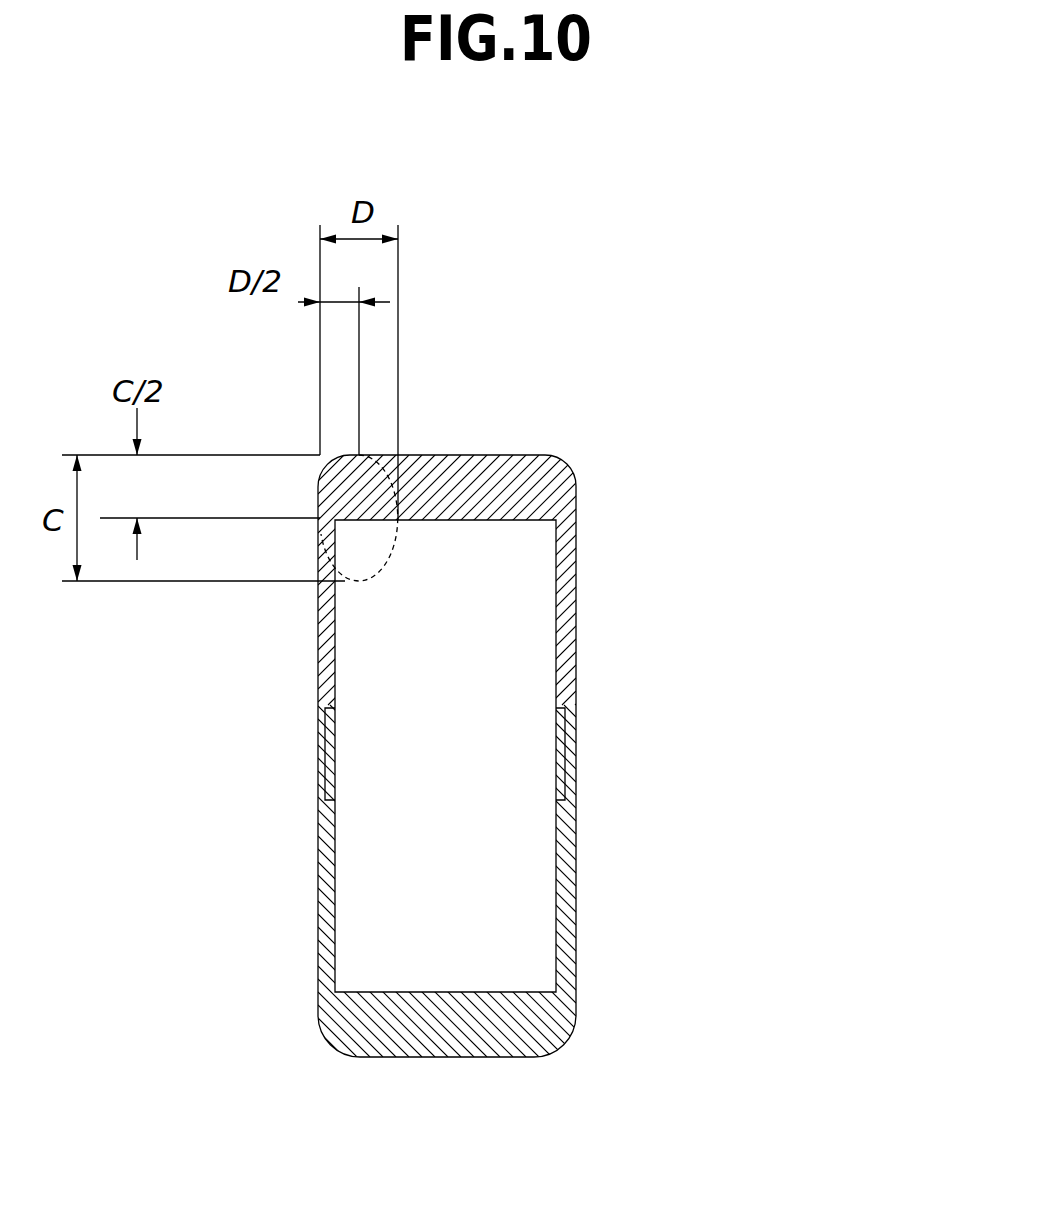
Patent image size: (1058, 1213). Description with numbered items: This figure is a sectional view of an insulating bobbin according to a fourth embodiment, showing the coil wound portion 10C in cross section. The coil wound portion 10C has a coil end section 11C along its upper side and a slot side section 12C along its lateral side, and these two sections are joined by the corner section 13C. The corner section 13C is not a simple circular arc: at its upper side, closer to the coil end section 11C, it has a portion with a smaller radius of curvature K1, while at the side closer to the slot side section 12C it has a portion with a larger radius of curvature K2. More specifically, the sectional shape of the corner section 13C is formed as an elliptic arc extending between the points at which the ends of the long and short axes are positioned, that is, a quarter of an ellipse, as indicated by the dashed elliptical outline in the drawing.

The coil wound portion 10C is at (571, 706).
The coil end section 11C is at (530, 443).
The slot side section 12C is at (592, 518).
The corner section 13C is at (578, 462).
The smaller radius of curvature K1 is at (330, 449).
The larger radius of curvature K2 is at (305, 502).